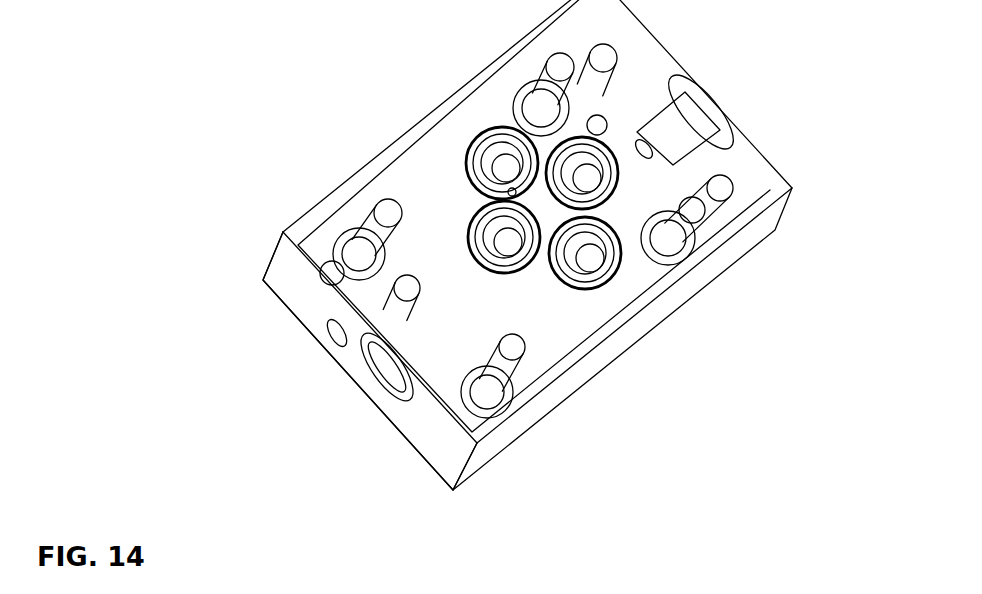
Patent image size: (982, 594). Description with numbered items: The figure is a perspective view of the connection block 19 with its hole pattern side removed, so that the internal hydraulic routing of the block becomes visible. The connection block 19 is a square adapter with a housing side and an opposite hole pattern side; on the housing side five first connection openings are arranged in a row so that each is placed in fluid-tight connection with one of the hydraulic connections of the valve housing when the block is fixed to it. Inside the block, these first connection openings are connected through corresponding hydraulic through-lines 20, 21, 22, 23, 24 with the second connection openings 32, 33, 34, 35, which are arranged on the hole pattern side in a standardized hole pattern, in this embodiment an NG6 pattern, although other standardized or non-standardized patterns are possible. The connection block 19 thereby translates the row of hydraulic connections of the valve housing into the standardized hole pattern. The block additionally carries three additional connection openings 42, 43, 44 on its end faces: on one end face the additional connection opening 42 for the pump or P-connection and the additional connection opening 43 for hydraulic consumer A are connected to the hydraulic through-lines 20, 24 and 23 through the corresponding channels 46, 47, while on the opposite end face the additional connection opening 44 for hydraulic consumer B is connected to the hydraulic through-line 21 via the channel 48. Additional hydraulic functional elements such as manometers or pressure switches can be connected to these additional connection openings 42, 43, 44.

The connection block 19 is at (214, 152).
The hydraulic through-line 20 is at (587, 130).
The hydraulic through-line 21 is at (540, 217).
The hydraulic through-line 22 is at (523, 267).
The hydraulic through-line 23 is at (490, 257).
The hydraulic through-line 24 is at (380, 298).
The second connection opening 32 is at (475, 165).
The second connection opening 33 is at (567, 263).
The second connection opening 34 is at (492, 255).
The second connection opening 35 is at (567, 183).
The additional connection opening 42 is at (320, 338).
The additional connection opening 43 is at (365, 365).
The additional connection opening 44 is at (692, 100).
The channel 46 is at (417, 243).
The channel 47 is at (455, 273).
The channel 48 is at (615, 163).